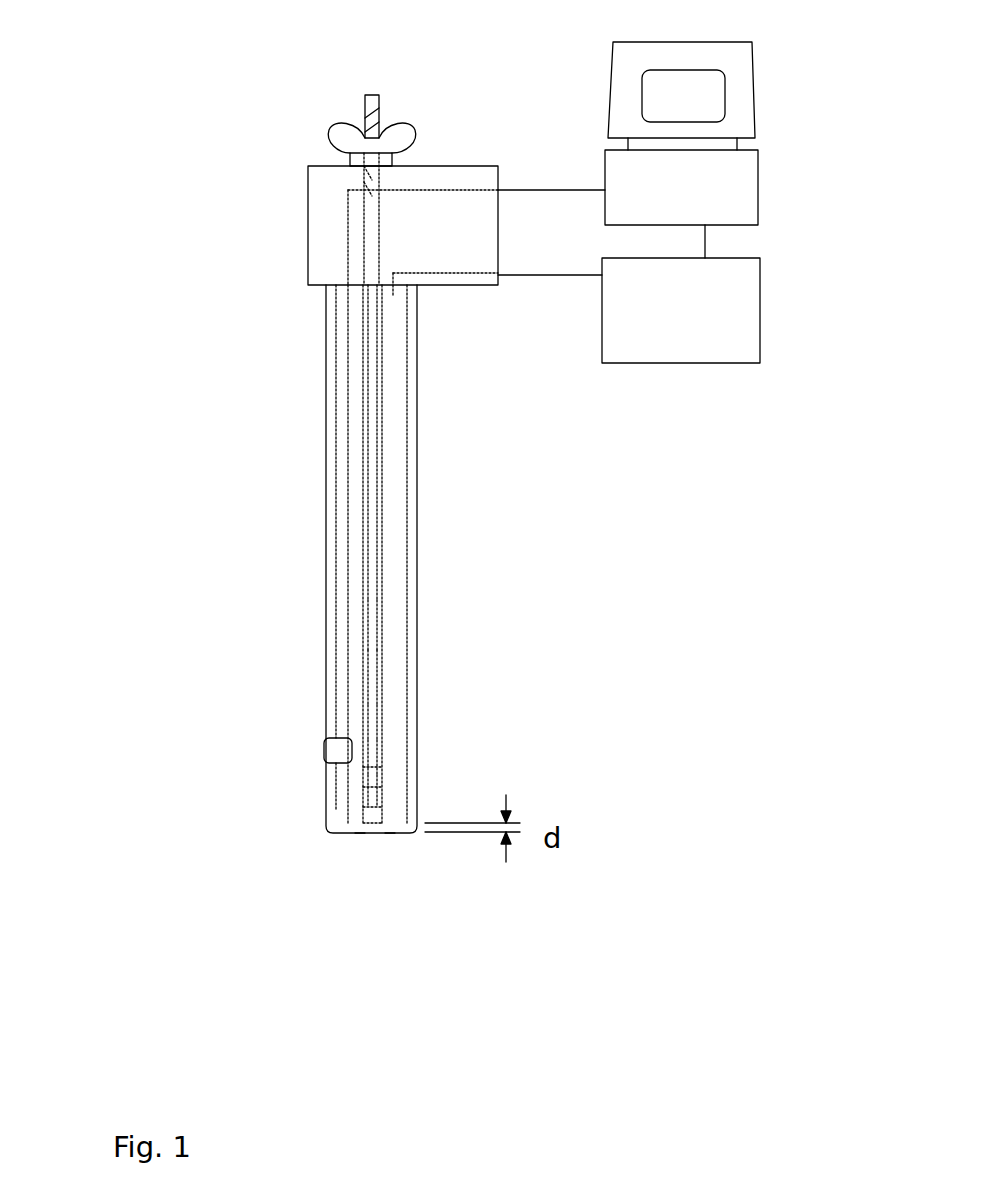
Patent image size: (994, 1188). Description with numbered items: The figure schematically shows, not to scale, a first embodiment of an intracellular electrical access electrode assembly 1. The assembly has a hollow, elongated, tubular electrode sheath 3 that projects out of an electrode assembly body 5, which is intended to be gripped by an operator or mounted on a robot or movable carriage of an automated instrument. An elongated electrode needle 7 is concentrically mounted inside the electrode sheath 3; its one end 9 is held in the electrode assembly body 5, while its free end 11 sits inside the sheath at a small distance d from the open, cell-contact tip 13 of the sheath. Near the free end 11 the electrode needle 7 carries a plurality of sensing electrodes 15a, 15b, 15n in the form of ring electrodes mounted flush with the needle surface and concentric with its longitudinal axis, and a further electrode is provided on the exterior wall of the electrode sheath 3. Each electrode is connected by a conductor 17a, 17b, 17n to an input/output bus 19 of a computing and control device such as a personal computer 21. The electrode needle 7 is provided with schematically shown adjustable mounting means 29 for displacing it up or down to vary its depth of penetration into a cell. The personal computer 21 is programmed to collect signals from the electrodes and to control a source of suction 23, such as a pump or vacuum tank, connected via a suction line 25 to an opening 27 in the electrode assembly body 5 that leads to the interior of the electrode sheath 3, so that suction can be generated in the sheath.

The intracellular electrical access electrode assembly 1 is at (212, 287).
The electrode sheath 3 is at (325, 663).
The electrode assembly body 5 is at (308, 200).
The electrode needle 7 is at (382, 548).
The one end of electrode needle 9 is at (343, 292).
The free end of electrode needle 11 is at (357, 822).
The open tip of electrode sheath 13 is at (388, 837).
The sensing electrode 15a is at (375, 797).
The sensing electrode 15b is at (375, 763).
The sensing electrode 15n is at (375, 725).
The conductor 17a is at (373, 697).
The conductor 17b is at (370, 637).
The conductor 17n is at (368, 595).
The input/output bus 19 is at (530, 190).
The personal computer 21 is at (742, 168).
The source of suction 23 is at (718, 338).
The suction line 25 is at (563, 275).
The opening 27 is at (393, 295).
The adjustable mounting means 29 is at (363, 138).